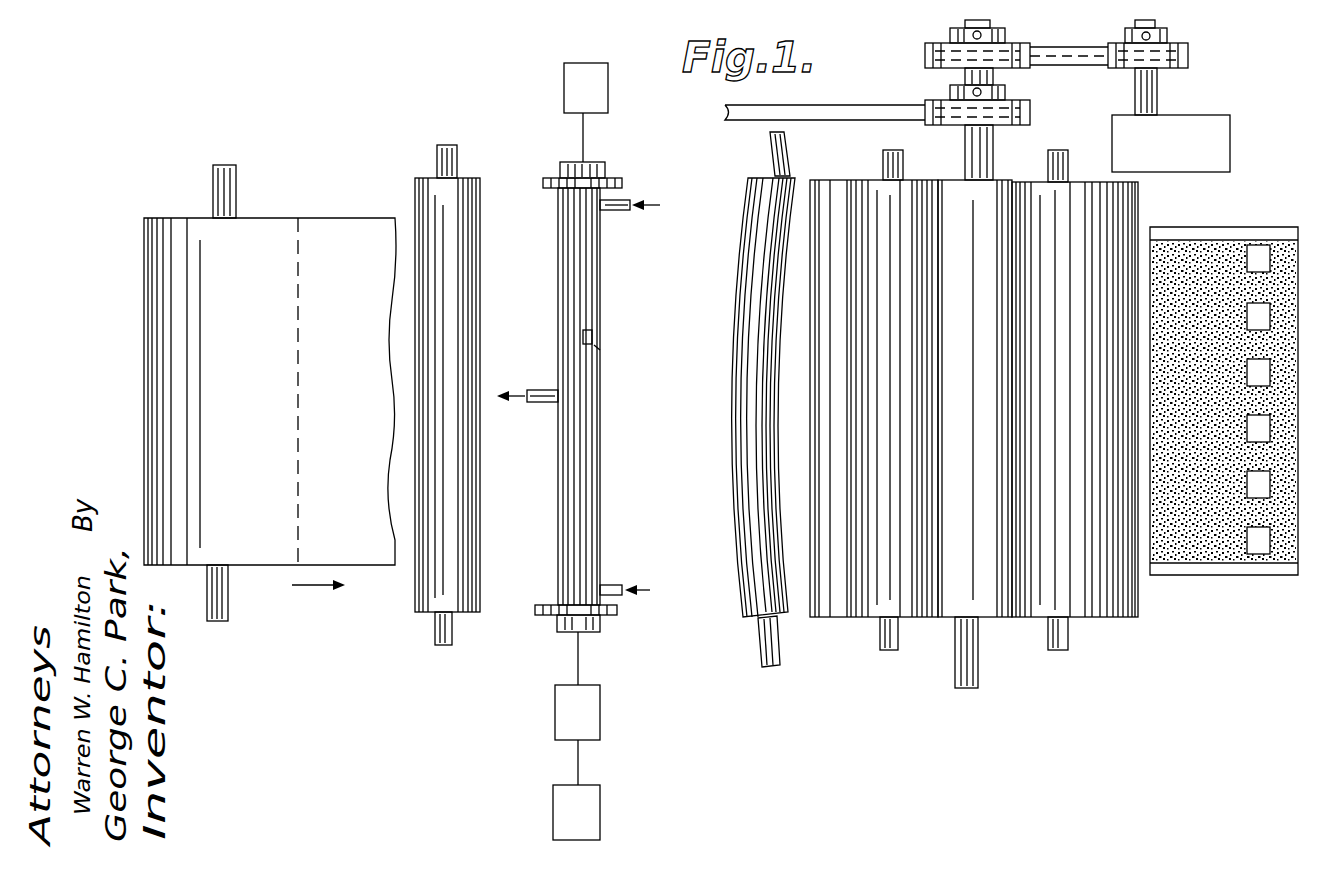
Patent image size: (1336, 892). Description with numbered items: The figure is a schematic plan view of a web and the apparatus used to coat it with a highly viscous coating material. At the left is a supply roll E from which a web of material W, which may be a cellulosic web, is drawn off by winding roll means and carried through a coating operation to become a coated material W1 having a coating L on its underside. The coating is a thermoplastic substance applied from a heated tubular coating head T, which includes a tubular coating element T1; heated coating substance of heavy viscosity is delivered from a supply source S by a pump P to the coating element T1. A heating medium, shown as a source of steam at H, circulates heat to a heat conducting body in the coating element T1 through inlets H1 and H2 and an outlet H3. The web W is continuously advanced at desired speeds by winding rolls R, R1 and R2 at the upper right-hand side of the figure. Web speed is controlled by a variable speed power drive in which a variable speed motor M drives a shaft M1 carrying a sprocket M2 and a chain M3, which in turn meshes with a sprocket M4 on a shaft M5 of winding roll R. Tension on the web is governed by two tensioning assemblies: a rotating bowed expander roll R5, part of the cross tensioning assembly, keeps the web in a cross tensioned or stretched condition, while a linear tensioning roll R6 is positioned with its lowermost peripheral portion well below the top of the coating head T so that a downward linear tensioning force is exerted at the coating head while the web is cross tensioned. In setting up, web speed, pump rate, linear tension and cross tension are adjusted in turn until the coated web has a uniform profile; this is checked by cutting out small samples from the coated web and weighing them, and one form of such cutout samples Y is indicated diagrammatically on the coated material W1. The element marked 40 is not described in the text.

The supply roll E is at (180, 566).
The web of material W is at (357, 542).
The linear tensioning roll R6 is at (478, 538).
The heating medium source H is at (610, 100).
The inlet H1 is at (625, 200).
The inlet H2 is at (613, 586).
The outlet H3 is at (538, 406).
The heated tubular coating head T is at (612, 257).
The tubular coating element T1 is at (635, 303).
The roller surface 40 is at (600, 352).
The pump P is at (602, 700).
The supply source S is at (603, 806).
The bowed expander roll R5 is at (745, 505).
The winding roll R1 is at (840, 618).
The winding roll R is at (948, 616).
The winding roll R2 is at (1070, 620).
The variable speed motor M is at (1203, 152).
The shaft M1 is at (1158, 90).
The sprocket M2 is at (1175, 45).
The chain M3 is at (1063, 60).
The sprocket M4 is at (940, 42).
The shaft M5 is at (990, 143).
The coated material W1 is at (1234, 425).
The cutout samples Y is at (1254, 542).
The coating L is at (1185, 535).